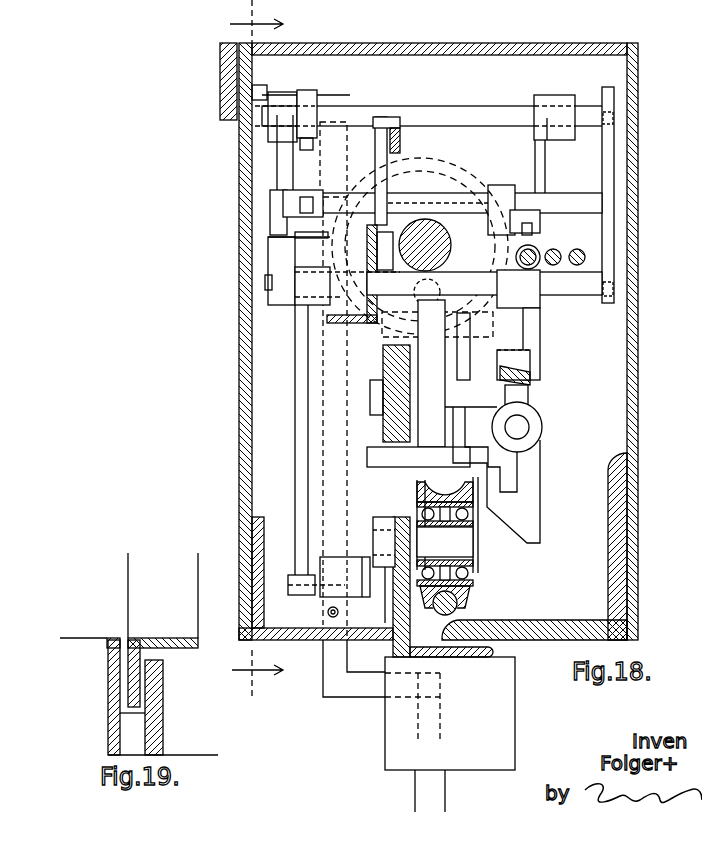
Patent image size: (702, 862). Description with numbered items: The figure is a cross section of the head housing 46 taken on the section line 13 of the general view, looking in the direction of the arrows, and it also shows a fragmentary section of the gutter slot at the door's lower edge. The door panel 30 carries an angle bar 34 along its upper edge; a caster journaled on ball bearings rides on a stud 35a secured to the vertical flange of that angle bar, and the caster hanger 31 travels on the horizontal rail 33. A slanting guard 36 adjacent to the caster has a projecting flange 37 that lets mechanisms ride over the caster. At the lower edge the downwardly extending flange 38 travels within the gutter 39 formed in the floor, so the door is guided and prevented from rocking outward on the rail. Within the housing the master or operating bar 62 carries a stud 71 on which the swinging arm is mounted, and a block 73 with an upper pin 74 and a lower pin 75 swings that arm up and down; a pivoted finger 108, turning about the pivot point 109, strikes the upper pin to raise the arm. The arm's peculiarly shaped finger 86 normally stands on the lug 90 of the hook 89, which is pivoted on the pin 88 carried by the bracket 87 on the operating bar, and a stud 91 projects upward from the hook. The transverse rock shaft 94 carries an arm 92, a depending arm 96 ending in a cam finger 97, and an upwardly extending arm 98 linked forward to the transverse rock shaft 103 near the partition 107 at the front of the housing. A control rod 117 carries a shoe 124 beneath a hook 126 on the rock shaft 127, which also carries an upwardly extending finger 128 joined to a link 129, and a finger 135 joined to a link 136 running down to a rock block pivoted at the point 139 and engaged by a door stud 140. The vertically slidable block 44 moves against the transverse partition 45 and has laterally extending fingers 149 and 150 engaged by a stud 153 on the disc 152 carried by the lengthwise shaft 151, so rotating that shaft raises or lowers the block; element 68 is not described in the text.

In FIG. 18, the section line 18—18 of Figure 13 is at (256, 350).
In FIG. 18, the element 68 is at (120, 0).
In FIG. 18, the head housing 46 is at (650, 194).
In FIG. 18, the transverse rock shaft 103 is at (488, 118).
In FIG. 18, the partition 107 is at (351, 82).
In FIG. 18, the transverse rock shaft 94 is at (590, 300).
In FIG. 18, the rock shaft 127 is at (566, 195).
In FIG. 18, the pivot point 109 is at (388, 238).
In FIG. 18, the hook 126 is at (484, 195).
In FIG. 18, the upwardly extending finger 128 is at (373, 147).
In FIG. 18, the link 129 is at (400, 152).
In FIG. 18, the disc 152 is at (443, 157).
In FIG. 18, the laterally extending finger 149 is at (420, 244).
In FIG. 18, the shaft 151 is at (437, 242).
In FIG. 18, the finger 108 is at (464, 274).
In FIG. 18, the stud 153 is at (440, 270).
In FIG. 18, the shoe 124 is at (518, 289).
In FIG. 18, the arm 96 is at (535, 343).
In FIG. 18, the control rod 117 is at (517, 257).
In FIG. 18, the laterally extending finger 150 is at (480, 322).
In FIG. 18, the block 73 is at (444, 373).
In FIG. 18, the cam finger 97 is at (514, 360).
In FIG. 18, the stud 91 is at (515, 382).
In FIG. 18, the master or operating bar 62 is at (387, 430).
In FIG. 18, the stud 71 is at (383, 395).
In FIG. 18, the lower pin 75 is at (375, 452).
In FIG. 18, the finger 86 is at (493, 465).
In FIG. 18, the hook 89 is at (530, 481).
In FIG. 18, the lug 90 is at (525, 495).
In FIG. 18, the bracket 87 is at (478, 420).
In FIG. 18, the pin 88 is at (520, 428).
In FIG. 18, the slanting guard 36 is at (416, 496).
In FIG. 18, the flange 37 is at (432, 478).
In FIG. 18, the stud 35a is at (460, 548).
In FIG. 18, the caster hanger 31 is at (472, 592).
In FIG. 18, the horizontal rod or rail 33 is at (462, 604).
In FIG. 18, the link 136 is at (300, 443).
In FIG. 18, the pivot point 139 is at (342, 420).
In FIG. 18, the stud 140 is at (327, 612).
In FIG. 18, the vertically slidable block 44 is at (347, 493).
In FIG. 18, the transverse partition 45 is at (430, 511).
In FIG. 18, the upwardly extending arm 98 is at (277, 255).
In FIG. 18, the arm 92 is at (280, 274).
In FIG. 18, the finger 135 is at (311, 195).
In FIG. 18, the upper pin 74 is at (495, 320).
In FIG. 18, the angle bar 34 is at (395, 648).
In FIG. 18, the door panel 30 is at (515, 712).
In FIG. 19, the downwardly extending flange 38 is at (140, 694).
In FIG. 19, the gutter 39 is at (130, 711).